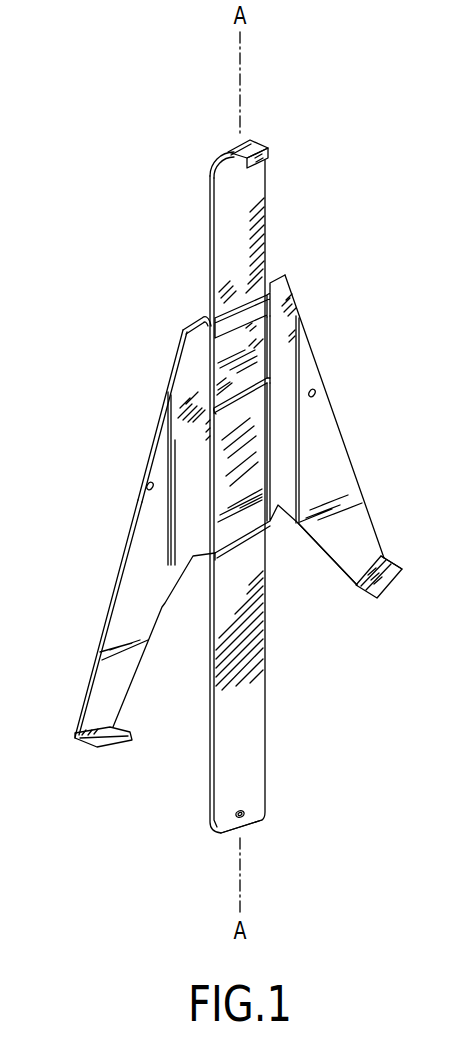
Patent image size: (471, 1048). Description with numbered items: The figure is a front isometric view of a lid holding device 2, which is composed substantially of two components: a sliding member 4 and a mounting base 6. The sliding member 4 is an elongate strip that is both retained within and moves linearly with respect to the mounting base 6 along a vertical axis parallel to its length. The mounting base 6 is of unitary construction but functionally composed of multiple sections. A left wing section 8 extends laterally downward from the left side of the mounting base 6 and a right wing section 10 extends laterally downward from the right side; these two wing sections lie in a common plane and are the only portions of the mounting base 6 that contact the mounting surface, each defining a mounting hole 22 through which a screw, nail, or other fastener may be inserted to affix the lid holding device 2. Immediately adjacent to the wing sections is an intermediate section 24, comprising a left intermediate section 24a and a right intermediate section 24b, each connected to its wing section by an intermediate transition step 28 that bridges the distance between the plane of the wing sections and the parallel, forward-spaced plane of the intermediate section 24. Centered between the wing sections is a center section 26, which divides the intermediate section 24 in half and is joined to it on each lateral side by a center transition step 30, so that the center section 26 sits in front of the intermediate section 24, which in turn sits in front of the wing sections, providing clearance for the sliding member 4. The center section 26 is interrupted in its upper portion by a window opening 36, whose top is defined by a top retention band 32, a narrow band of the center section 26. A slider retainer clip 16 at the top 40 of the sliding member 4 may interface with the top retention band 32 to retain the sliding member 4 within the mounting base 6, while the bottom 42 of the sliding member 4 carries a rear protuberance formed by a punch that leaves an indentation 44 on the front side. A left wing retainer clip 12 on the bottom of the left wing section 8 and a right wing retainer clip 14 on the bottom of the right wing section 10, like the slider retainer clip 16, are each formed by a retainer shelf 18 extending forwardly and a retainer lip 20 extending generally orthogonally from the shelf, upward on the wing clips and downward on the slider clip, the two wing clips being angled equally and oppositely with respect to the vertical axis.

The lid holding device 2 is at (118, 240).
The sliding member 4 is at (262, 240).
The mounting base 6 is at (286, 299).
The left wing section 8 is at (136, 550).
The right wing section 10 is at (340, 466).
The left wing retainer clip 12 is at (74, 742).
The right wing retainer clip 14 is at (390, 560).
The slider retainer clip 16 is at (215, 170).
The retainer shelf 18 is at (254, 150).
The retainer lip 20 is at (270, 165).
The mounting hole 22 is at (148, 484).
The intermediate section 24 is at (178, 322).
The left intermediate section 24a is at (182, 364).
The right intermediate section 24b is at (298, 438).
The center section 26 is at (274, 400).
The intermediate transition step 28 is at (168, 425).
The center transition step 30 is at (208, 494).
The top retention band 32 is at (227, 327).
The window opening 36 is at (280, 332).
The top of the sliding member 40 is at (258, 100).
The bottom of the sliding member 42 is at (262, 845).
The indentation 44 is at (245, 815).